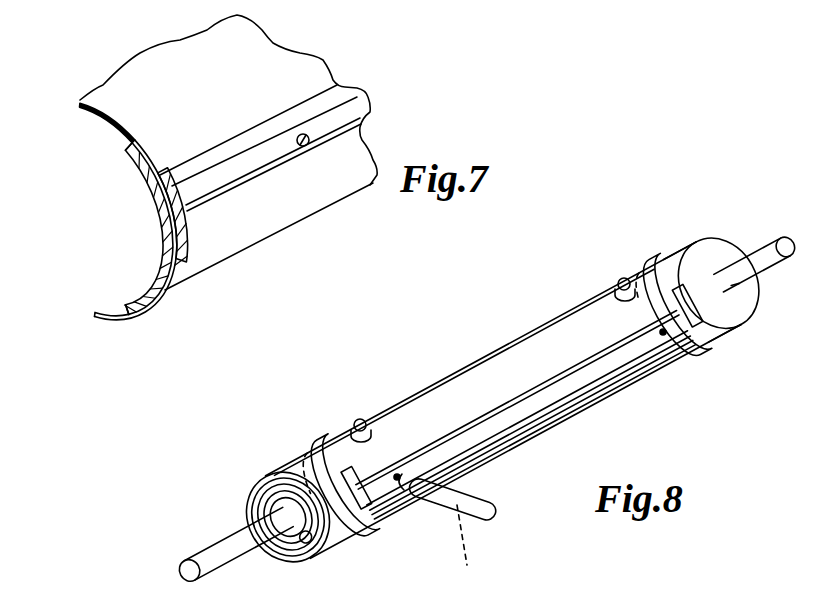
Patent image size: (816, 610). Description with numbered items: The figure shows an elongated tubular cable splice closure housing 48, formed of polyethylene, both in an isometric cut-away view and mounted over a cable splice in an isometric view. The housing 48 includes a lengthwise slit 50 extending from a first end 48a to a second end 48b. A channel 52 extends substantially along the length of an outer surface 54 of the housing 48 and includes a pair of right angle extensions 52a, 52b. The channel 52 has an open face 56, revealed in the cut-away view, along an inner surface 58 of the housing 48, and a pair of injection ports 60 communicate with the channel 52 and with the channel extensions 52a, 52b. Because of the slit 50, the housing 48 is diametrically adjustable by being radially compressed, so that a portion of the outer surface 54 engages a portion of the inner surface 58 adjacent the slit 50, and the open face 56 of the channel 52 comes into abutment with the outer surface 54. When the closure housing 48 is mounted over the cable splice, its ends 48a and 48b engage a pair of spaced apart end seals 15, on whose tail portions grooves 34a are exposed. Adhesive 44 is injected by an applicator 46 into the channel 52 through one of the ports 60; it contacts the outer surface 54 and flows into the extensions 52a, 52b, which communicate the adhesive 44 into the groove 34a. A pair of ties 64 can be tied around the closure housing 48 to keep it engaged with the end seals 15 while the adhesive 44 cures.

In FIG. 8, the end seal 15 is at (205, 540).
In FIG. 8, the groove 34a is at (287, 457).
In FIG. 8, the adhesive 44 is at (475, 549).
In FIG. 8, the applicator 46 is at (485, 495).
In FIG. 7, the cable splice closure housing 48 is at (273, 43).
In FIG. 8, the cable splice closure housing 48 is at (490, 352).
In FIG. 8, the first end 48a is at (246, 498).
In FIG. 8, the second end 48b is at (735, 302).
In FIG. 7, the lengthwise slit 50 is at (127, 146).
In FIG. 7, the channel 52 is at (360, 107).
In FIG. 8, the channel 52 is at (592, 375).
In FIG. 8, the right angle extension 52a is at (345, 468).
In FIG. 8, the right angle extension 52b is at (688, 278).
In FIG. 7, the outer surface 54 is at (219, 263).
In FIG. 7, the open face 56 is at (160, 212).
In FIG. 7, the inner surface 58 is at (93, 112).
In FIG. 7, the injection port 60 is at (305, 146).
In FIG. 8, the injection port 60 is at (397, 477).
In FIG. 8, the tie 64 is at (340, 443).